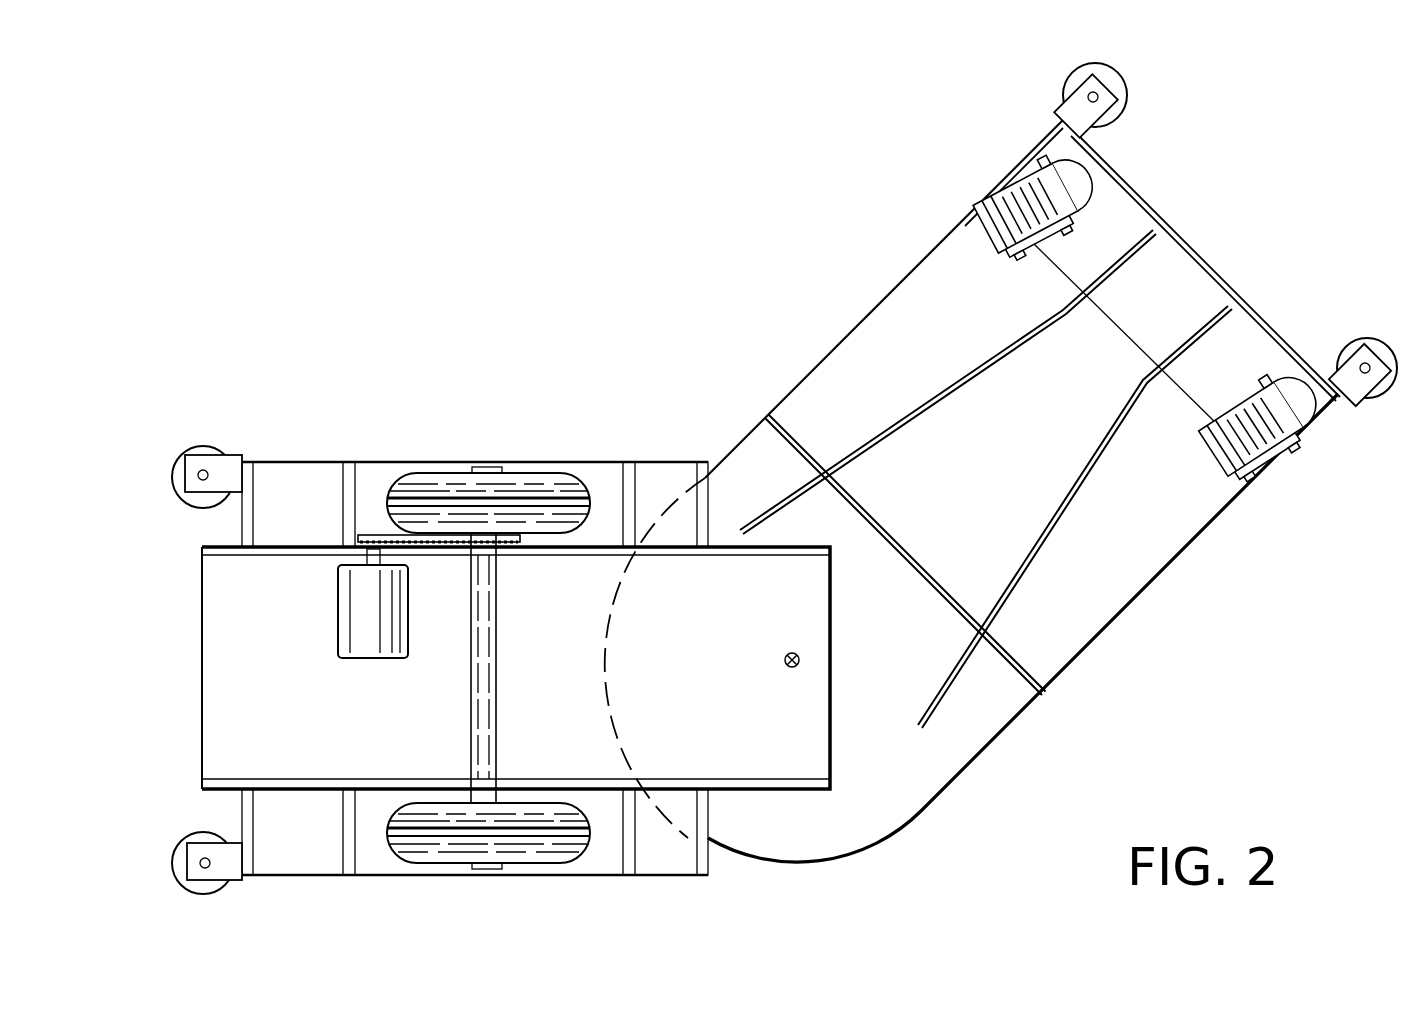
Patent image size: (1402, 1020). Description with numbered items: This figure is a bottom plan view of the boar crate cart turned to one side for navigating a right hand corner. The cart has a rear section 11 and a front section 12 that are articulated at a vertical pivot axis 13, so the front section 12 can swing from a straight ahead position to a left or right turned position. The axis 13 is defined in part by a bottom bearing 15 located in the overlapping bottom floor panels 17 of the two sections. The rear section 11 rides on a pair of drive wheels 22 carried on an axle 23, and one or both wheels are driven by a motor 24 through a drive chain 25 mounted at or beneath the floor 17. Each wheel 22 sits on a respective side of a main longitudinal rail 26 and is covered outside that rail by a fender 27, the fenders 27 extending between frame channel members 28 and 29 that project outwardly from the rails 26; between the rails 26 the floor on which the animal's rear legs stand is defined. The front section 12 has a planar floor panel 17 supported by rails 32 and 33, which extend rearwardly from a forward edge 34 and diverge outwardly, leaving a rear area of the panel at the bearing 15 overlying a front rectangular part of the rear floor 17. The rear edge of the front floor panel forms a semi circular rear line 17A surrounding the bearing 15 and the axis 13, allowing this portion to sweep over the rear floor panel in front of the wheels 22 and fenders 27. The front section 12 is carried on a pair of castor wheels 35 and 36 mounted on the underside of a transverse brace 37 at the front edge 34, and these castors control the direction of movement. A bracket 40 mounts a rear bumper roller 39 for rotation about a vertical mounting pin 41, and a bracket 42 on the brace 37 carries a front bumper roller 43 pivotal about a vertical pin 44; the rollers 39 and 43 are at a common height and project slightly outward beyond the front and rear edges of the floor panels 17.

The rear section 11 is at (511, 418).
The front section 12 is at (864, 262).
The vertical pivot axis 13 is at (789, 657).
The bottom bearing 15 is at (792, 670).
The floor panel 17 is at (1130, 573).
The semi circular rear line 17A is at (610, 752).
The drive wheels 22 is at (540, 492).
The axle 23 is at (497, 633).
The motor 24 is at (336, 622).
The drive chain 25 is at (425, 542).
The main longitudinal rail 26 is at (437, 778).
The fender 27 is at (352, 505).
The frame channel member 28 is at (272, 490).
The frame channel member 29 is at (657, 490).
The rail 32 is at (975, 362).
The rail 33 is at (1075, 478).
The forward edge 34 is at (1181, 220).
The castor wheel 35 is at (980, 234).
The castor wheel 36 is at (1298, 464).
The transverse brace 37 is at (1160, 322).
The bumper roller 39 is at (197, 445).
The bracket 40 is at (218, 486).
The vertical mounting pin 41 is at (197, 476).
The bracket 42 is at (1056, 110).
The front bumper roller 43 is at (1122, 84).
The vertical pin 44 is at (1098, 101).